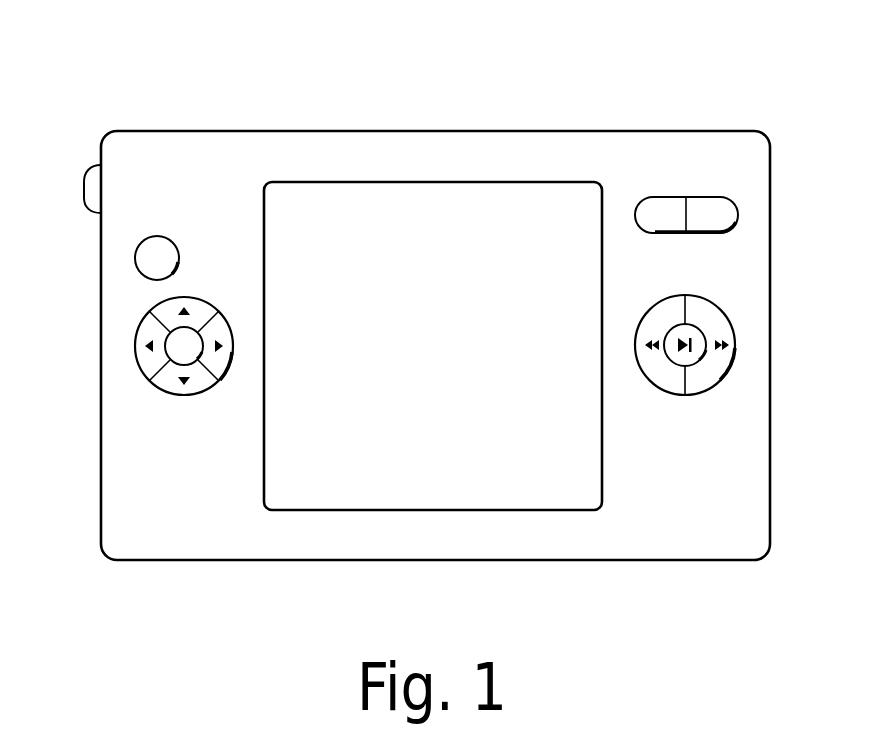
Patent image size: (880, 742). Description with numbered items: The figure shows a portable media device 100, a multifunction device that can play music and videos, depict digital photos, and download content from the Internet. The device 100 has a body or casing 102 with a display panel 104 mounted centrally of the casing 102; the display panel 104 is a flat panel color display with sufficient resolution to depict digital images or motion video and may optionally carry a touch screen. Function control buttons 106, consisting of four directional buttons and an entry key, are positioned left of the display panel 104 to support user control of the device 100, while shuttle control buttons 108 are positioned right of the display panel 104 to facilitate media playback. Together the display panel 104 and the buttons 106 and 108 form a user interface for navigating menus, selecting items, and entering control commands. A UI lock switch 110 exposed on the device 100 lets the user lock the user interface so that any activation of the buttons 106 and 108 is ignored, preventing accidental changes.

The portable media device 100 is at (550, 84).
The casing 102 is at (359, 131).
The display panel 104 is at (433, 346).
The function control buttons 106 is at (138, 327).
The shuttle control buttons 108 is at (733, 325).
The UI lock switch 110 is at (88, 168).